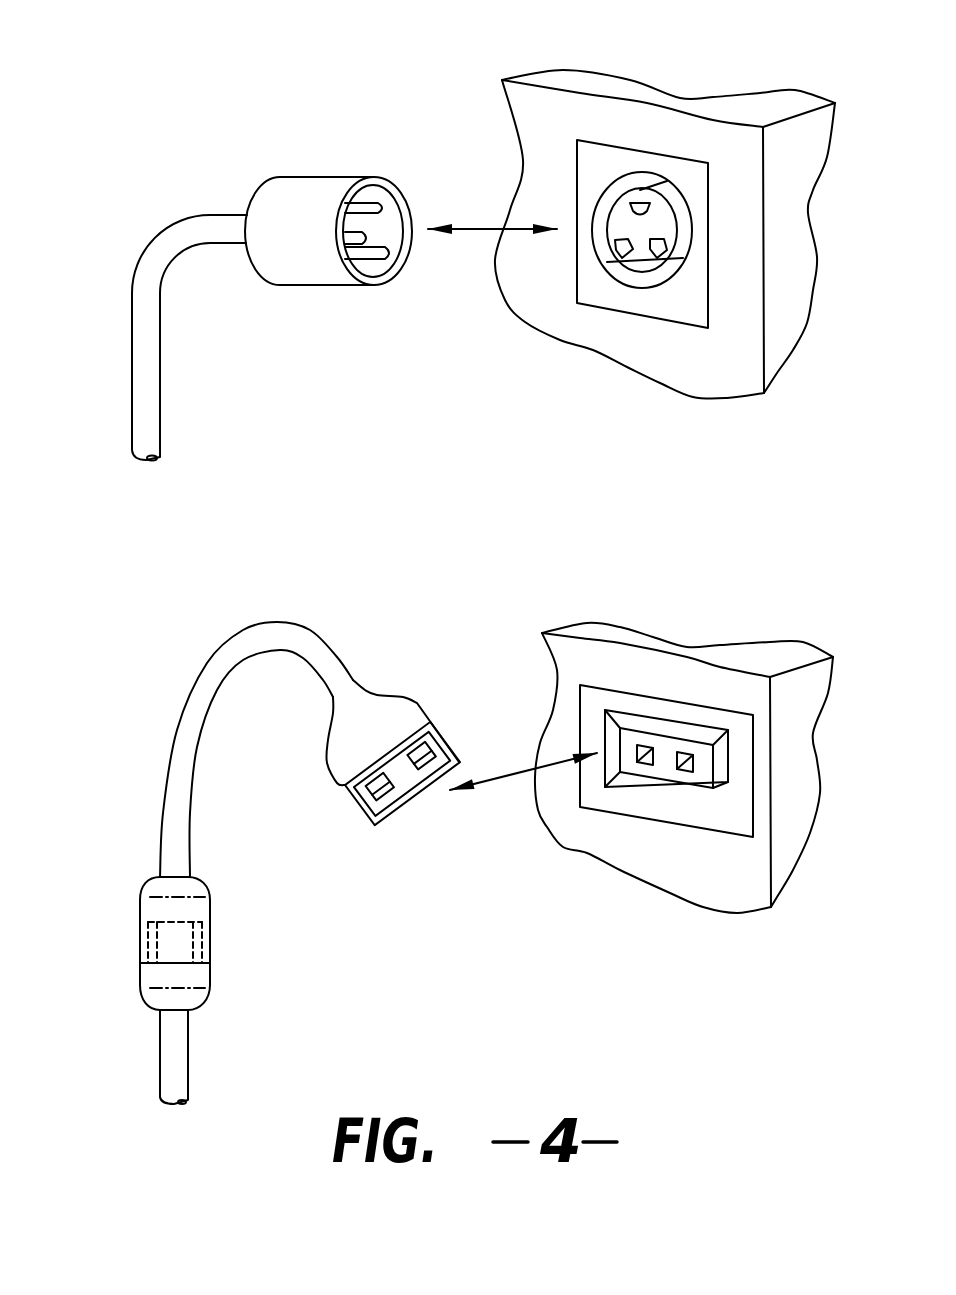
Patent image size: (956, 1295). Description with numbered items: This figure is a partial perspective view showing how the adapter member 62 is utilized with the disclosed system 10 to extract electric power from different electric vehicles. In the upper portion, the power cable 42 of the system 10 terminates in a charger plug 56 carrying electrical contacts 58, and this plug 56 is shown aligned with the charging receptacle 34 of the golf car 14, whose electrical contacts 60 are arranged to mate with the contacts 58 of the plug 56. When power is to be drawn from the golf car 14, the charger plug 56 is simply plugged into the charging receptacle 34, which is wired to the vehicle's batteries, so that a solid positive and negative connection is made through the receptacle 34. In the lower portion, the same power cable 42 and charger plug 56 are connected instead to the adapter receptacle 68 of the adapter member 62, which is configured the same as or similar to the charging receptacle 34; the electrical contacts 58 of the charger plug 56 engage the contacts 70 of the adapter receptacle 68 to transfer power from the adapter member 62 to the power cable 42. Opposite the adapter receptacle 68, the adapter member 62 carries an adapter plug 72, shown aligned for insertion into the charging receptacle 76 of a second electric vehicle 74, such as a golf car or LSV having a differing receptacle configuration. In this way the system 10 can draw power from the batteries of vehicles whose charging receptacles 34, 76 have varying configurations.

The system 10 is at (230, 73).
The golf car 14 is at (540, 63).
The charging receptacle 34 is at (620, 178).
The power cable 42 is at (130, 382).
The charger plug 56 is at (327, 175).
The electrical contacts 58 is at (386, 210).
The electrical contacts 60 is at (655, 252).
The adapter member 62 is at (222, 655).
The adapter receptacle 68 is at (148, 883).
The contacts 70 is at (150, 932).
The adapter plug 72 is at (390, 693).
The second electric vehicle 74 is at (580, 622).
The charging receptacle 76 is at (668, 733).